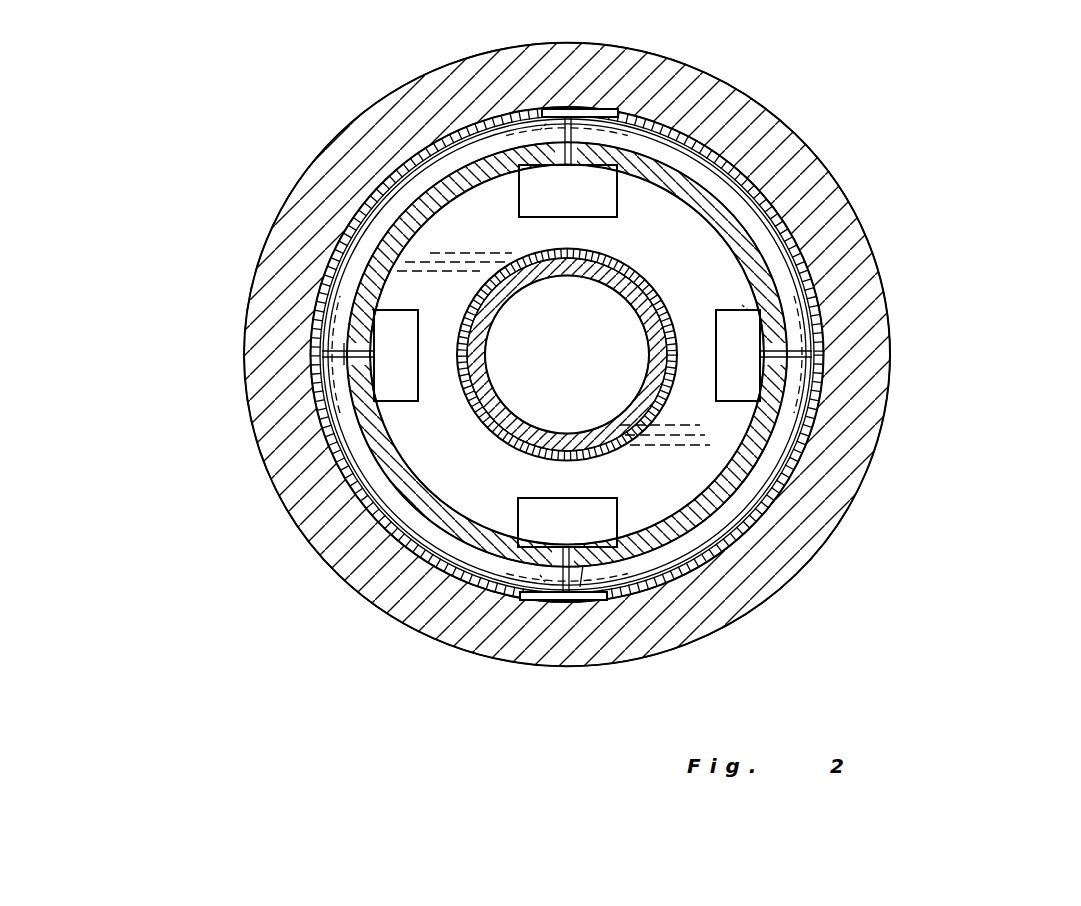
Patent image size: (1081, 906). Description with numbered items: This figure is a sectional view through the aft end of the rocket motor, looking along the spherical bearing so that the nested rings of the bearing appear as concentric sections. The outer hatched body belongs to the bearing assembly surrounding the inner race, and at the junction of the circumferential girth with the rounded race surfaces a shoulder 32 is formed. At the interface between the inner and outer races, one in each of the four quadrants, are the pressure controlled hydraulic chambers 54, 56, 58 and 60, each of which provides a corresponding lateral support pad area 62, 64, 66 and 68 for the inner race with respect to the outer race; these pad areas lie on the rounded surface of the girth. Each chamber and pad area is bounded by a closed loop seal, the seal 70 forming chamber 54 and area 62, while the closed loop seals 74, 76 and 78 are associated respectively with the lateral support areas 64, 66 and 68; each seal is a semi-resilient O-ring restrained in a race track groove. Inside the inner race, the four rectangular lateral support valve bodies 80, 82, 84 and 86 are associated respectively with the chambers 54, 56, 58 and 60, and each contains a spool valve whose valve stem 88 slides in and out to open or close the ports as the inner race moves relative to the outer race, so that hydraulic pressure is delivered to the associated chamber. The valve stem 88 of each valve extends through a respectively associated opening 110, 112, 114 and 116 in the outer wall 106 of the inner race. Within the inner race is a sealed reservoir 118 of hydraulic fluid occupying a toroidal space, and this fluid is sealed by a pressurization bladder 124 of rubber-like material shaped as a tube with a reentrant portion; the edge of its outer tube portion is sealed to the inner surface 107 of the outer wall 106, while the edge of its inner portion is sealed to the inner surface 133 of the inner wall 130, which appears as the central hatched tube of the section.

The shoulder 32 is at (778, 273).
The hydraulic chamber 54 is at (540, 575).
The hydraulic chamber 56 is at (377, 305).
The hydraulic chamber 58 is at (454, 247).
The hydraulic chamber 60 is at (742, 305).
The lateral support pad area 62 is at (527, 591).
The lateral support pad area 64 is at (313, 335).
The lateral support pad area 66 is at (545, 110).
The lateral support pad area 68 is at (820, 325).
The closed loop seal 70 is at (607, 572).
The closed loop seal 74 is at (335, 400).
The closed loop seal 76 is at (617, 133).
The closed loop seal 78 is at (862, 500).
The lateral support valve body 80 is at (573, 522).
The lateral support valve body 82 is at (395, 343).
The lateral support valve body 84 is at (597, 198).
The lateral support valve body 86 is at (727, 365).
The valve stem 88 is at (612, 113).
The outer wall 106 is at (737, 247).
The inner surface 107 is at (393, 447).
The opening 110 is at (583, 565).
The opening 112 is at (352, 362).
The opening 114 is at (540, 130).
The opening 116 is at (762, 383).
The sealed reservoir 118 is at (430, 255).
The pressurization bladder 124 is at (495, 430).
The inner wall 130 is at (493, 307).
The inner surface 133 is at (480, 388).